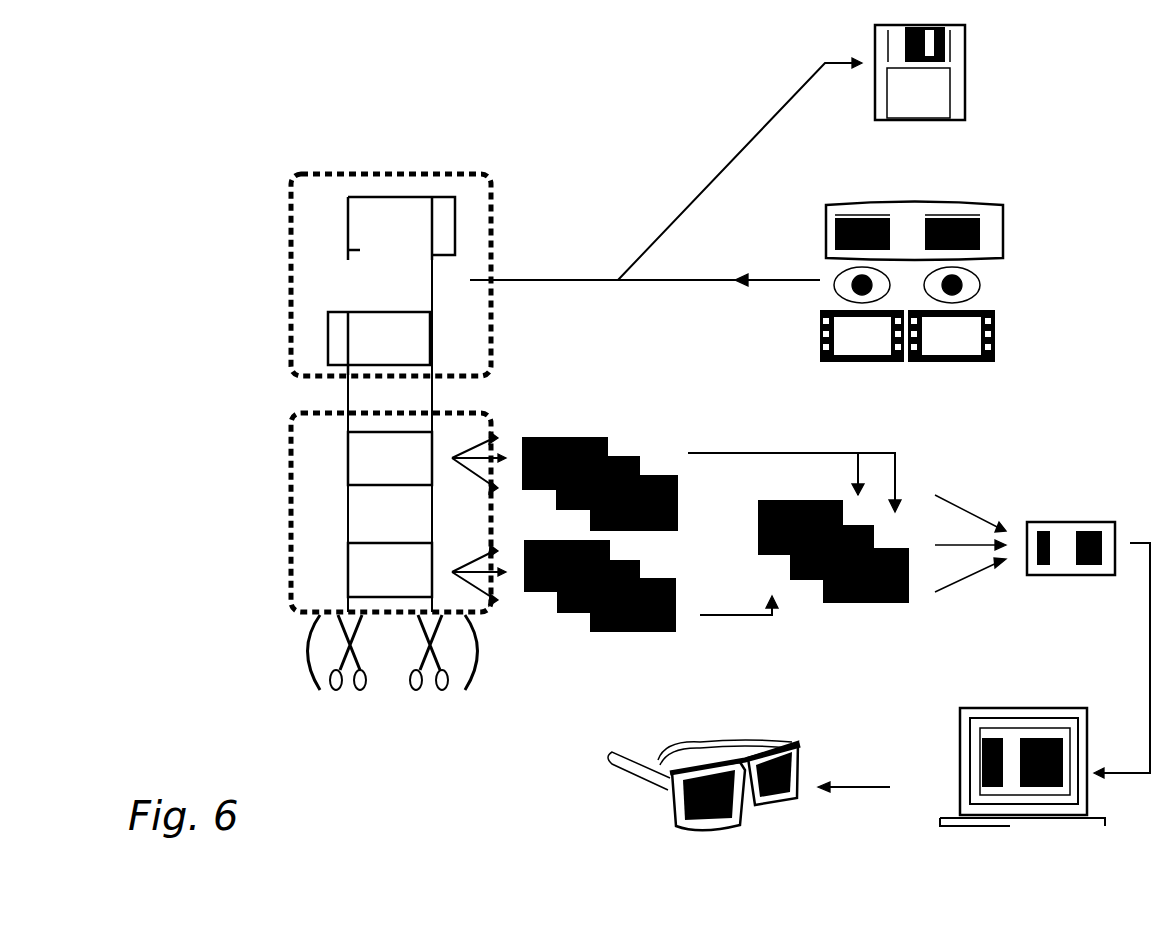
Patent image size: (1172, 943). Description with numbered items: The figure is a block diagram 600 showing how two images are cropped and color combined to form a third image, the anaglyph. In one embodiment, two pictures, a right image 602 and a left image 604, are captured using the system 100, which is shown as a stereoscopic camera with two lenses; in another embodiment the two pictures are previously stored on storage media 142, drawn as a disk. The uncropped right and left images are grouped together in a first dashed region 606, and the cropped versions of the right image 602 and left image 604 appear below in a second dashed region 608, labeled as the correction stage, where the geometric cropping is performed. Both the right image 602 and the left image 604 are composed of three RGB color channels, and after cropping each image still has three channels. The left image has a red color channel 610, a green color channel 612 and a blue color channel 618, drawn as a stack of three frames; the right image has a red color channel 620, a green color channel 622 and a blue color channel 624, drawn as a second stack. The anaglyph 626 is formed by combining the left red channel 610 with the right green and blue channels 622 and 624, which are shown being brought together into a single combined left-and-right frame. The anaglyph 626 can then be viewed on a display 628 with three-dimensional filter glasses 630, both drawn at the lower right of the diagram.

The system 100 is at (1003, 232).
The storage media 142 is at (920, 122).
The block diagram 600 is at (510, 776).
The right image 602 is at (400, 197).
The left image 604 is at (420, 345).
The uncorrected image pair 606 is at (280, 322).
The corrected image pair 608 is at (280, 455).
The red color channel 610 is at (540, 622).
The green color channel 612 is at (572, 645).
The blue color channel 618 is at (630, 635).
The red color channel 620 is at (567, 403).
The green color channel 622 is at (637, 448).
The blue color channel 624 is at (673, 470).
The anaglyph 626 is at (1073, 488).
The display 628 is at (1017, 706).
The 3-D filter glasses 630 is at (752, 808).